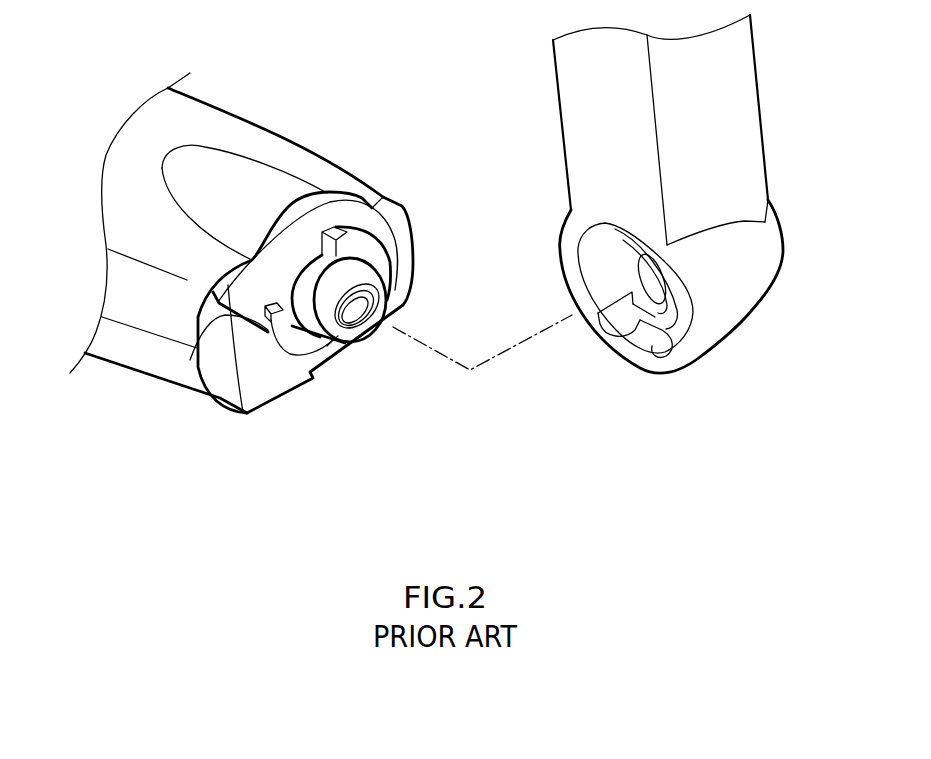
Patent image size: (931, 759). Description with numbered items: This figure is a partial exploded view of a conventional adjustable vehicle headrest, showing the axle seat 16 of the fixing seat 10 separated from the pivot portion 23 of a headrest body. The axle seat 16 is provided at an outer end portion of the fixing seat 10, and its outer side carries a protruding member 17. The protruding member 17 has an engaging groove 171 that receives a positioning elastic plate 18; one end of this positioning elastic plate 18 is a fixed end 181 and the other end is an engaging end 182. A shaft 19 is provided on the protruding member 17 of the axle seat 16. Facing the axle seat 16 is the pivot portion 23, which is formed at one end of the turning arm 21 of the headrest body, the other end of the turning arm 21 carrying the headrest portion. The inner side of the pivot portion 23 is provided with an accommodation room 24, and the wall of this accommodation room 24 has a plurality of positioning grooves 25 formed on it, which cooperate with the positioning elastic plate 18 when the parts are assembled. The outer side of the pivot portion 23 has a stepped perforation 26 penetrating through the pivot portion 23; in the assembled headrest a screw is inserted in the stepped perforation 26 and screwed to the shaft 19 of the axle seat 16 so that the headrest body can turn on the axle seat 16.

The fixing seat 10 is at (252, 137).
The axle seat 16 is at (217, 376).
The protruding member 17 is at (399, 221).
The engaging groove 171 is at (318, 362).
The positioning elastic plate 18 is at (274, 402).
The fixed end 181 is at (333, 340).
The engaging end 182 is at (190, 360).
The shaft 19 is at (380, 300).
The turning arm 21 is at (610, 93).
The pivot portion 23 is at (657, 330).
The accommodation room 24 is at (592, 258).
The positioning grooves 25 is at (660, 353).
The stepped perforation 26 is at (658, 270).